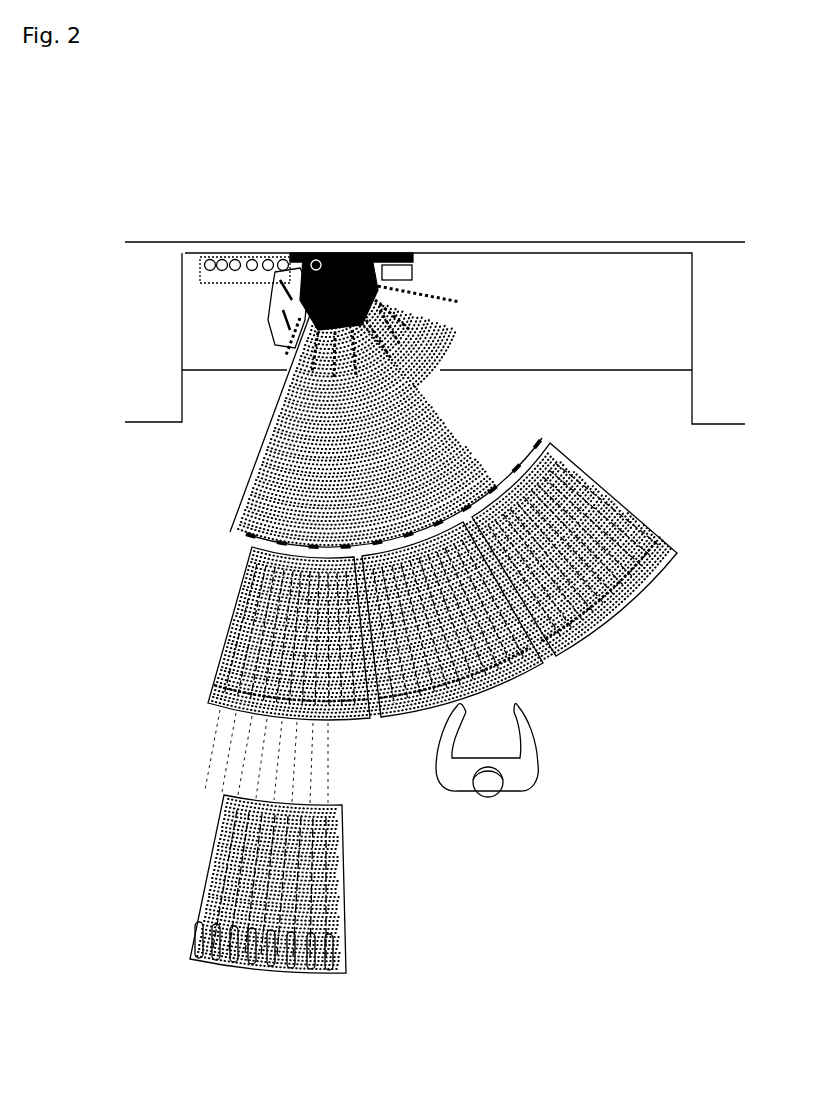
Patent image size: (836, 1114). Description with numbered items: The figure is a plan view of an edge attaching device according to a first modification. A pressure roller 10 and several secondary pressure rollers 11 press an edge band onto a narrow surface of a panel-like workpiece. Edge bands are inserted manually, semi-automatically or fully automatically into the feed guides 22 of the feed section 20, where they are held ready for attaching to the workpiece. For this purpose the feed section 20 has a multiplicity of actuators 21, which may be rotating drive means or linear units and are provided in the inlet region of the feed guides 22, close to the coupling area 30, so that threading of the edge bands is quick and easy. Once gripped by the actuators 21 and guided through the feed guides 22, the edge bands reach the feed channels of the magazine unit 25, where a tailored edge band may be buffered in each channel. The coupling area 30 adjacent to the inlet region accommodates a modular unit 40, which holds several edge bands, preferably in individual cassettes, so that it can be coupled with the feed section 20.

The pressure roller 10 is at (276, 290).
The secondary pressure rollers 11 is at (203, 270).
The feed section 20 is at (568, 396).
The actuators 21 is at (512, 478).
The feed guides 22 is at (283, 480).
The magazine unit 25 is at (339, 265).
The coupling area 30 is at (674, 517).
The modular unit 40 is at (262, 968).